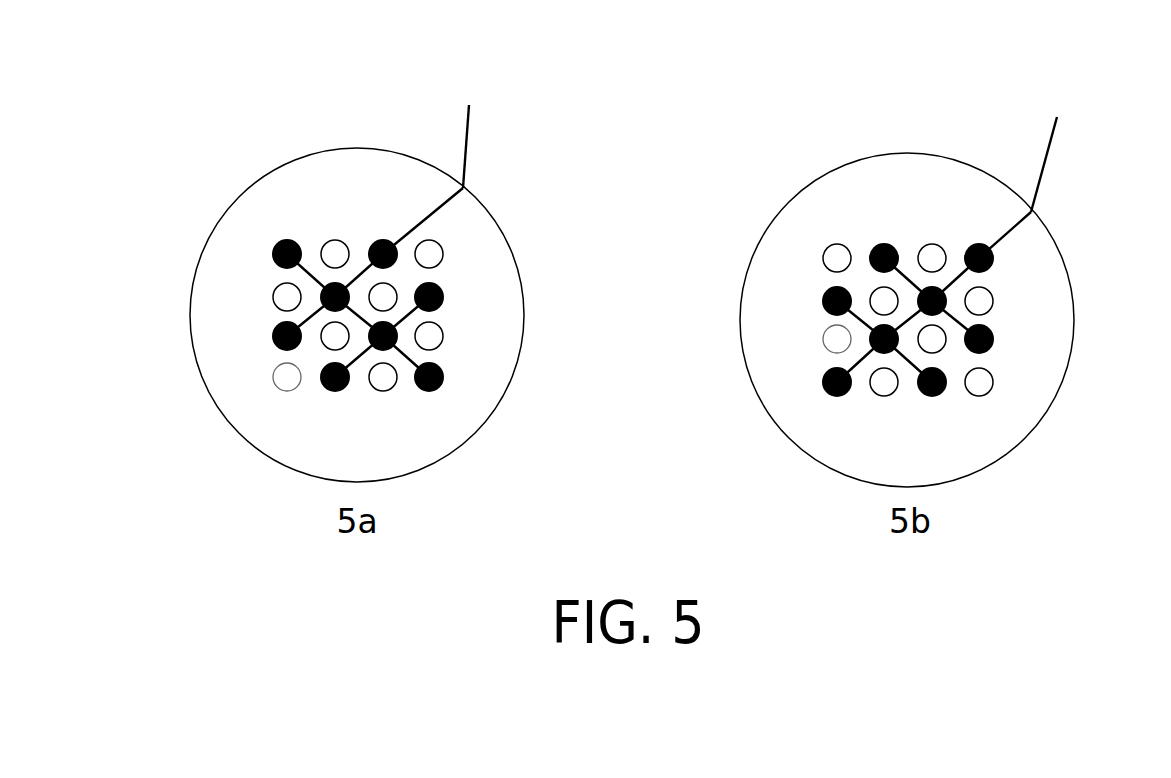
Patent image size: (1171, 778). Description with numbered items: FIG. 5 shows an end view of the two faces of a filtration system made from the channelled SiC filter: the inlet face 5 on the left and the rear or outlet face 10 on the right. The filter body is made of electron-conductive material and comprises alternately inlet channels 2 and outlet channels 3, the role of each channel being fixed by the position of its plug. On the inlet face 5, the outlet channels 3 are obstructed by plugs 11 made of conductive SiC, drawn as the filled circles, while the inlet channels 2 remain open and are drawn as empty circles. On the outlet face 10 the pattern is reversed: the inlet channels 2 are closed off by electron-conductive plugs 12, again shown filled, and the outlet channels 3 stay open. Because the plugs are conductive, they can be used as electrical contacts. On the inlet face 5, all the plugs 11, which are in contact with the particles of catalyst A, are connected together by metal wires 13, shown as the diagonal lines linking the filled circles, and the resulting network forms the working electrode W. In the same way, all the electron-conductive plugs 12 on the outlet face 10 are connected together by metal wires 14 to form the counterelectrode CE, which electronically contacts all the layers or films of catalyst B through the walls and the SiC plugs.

The inlet face 5 is at (315, 198).
The rear face 10 is at (867, 200).
The plugs 11 is at (273, 260).
The electron-conductive plugs 12 is at (823, 296).
The metal wires 13 is at (420, 307).
The metal wires 14 is at (947, 312).
The inlet channels 2 is at (273, 333).
The outlet channels 3 is at (275, 378).
The working electrode W is at (476, 117).
The counterelectrode CE is at (1066, 142).